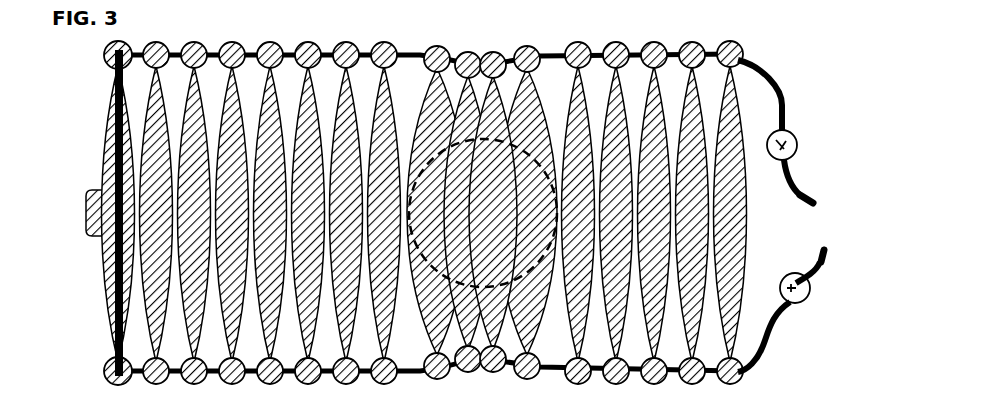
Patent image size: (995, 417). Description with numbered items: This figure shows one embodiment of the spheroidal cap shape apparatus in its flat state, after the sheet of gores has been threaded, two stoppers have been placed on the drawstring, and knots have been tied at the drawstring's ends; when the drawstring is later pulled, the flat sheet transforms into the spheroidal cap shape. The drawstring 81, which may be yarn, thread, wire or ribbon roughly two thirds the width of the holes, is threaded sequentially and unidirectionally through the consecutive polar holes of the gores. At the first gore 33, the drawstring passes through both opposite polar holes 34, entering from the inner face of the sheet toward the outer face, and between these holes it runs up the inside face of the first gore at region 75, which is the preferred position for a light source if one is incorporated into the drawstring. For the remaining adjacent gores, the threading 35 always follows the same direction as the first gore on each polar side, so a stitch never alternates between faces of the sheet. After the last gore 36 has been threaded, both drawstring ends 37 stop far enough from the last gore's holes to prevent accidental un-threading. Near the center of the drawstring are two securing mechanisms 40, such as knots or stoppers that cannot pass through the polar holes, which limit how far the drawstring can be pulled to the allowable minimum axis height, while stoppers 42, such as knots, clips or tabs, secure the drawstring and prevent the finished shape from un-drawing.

The first gore 33 is at (104, 170).
The polar holes of the first gore 34 is at (105, 60).
The threading of remaining adjacent gores 35 is at (745, 35).
The last gore 36 is at (744, 50).
The drawstring ends 37 is at (816, 205).
The drawstring securing mechanism 40 is at (110, 106).
The stopper 42 is at (795, 137).
The first gore inside face region 75 is at (110, 268).
The drawstring 81 is at (782, 92).